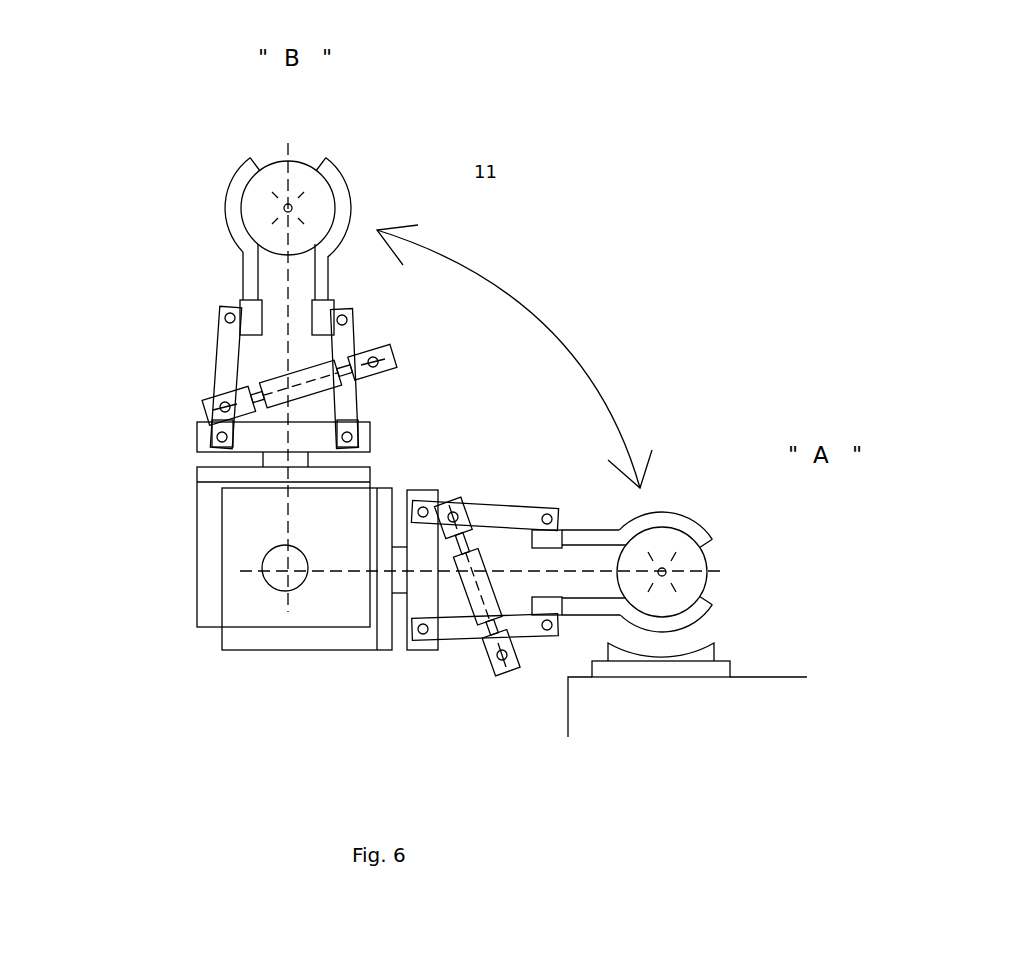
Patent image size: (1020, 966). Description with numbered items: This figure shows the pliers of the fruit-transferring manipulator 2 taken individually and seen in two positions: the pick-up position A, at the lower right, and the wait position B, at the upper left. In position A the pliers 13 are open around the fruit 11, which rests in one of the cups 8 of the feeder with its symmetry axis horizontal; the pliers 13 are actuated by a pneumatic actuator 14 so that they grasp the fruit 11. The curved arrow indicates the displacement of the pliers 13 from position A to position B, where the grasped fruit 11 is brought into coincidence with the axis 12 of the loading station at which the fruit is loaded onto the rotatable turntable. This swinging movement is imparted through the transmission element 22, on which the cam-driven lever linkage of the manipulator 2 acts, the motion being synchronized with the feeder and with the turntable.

The manipulator 2 is at (515, 500).
The cup 8 is at (713, 648).
The fruit 11 is at (328, 212).
The axis of the loading station 12 is at (300, 201).
The pliers 13 is at (226, 203).
The pneumatic actuator 14 is at (279, 375).
The transmission element 22 is at (196, 515).